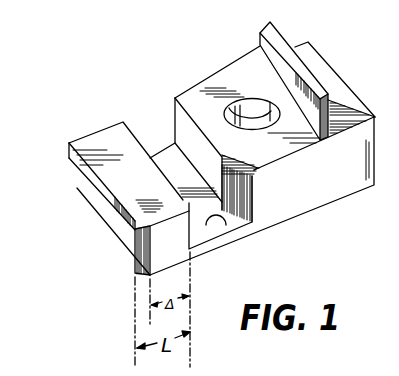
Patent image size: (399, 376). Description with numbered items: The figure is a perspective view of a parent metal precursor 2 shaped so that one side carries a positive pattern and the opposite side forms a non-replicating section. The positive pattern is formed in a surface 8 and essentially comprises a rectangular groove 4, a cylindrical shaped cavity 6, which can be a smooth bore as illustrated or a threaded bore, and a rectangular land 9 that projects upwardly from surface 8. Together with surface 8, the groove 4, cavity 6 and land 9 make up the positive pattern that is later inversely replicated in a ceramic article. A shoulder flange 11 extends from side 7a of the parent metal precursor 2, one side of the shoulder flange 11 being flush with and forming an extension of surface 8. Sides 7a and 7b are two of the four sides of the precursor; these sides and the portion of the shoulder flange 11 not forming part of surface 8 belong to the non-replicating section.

The parent metal precursor 2 is at (133, 114).
The rectangular groove 4 is at (232, 214).
The cylindrical shaped cavity 6 is at (251, 100).
The side 7a is at (118, 232).
The side 7b is at (304, 196).
The surface 8 is at (143, 166).
The rectangular land 9 is at (302, 70).
The shoulder flange 11 is at (77, 188).